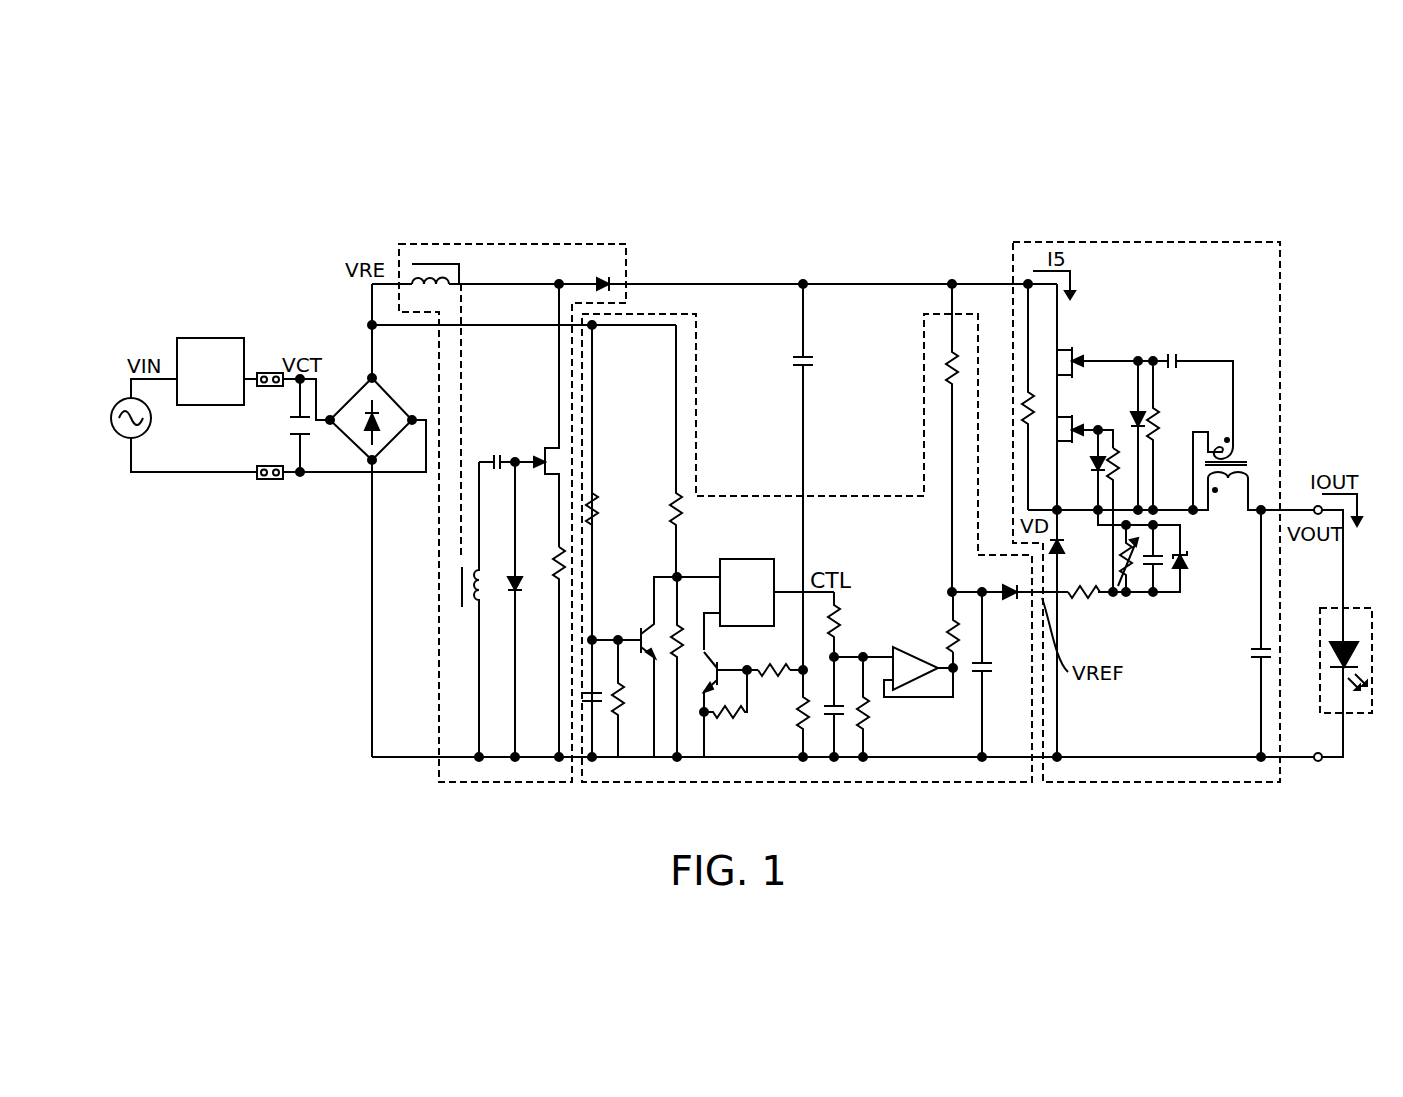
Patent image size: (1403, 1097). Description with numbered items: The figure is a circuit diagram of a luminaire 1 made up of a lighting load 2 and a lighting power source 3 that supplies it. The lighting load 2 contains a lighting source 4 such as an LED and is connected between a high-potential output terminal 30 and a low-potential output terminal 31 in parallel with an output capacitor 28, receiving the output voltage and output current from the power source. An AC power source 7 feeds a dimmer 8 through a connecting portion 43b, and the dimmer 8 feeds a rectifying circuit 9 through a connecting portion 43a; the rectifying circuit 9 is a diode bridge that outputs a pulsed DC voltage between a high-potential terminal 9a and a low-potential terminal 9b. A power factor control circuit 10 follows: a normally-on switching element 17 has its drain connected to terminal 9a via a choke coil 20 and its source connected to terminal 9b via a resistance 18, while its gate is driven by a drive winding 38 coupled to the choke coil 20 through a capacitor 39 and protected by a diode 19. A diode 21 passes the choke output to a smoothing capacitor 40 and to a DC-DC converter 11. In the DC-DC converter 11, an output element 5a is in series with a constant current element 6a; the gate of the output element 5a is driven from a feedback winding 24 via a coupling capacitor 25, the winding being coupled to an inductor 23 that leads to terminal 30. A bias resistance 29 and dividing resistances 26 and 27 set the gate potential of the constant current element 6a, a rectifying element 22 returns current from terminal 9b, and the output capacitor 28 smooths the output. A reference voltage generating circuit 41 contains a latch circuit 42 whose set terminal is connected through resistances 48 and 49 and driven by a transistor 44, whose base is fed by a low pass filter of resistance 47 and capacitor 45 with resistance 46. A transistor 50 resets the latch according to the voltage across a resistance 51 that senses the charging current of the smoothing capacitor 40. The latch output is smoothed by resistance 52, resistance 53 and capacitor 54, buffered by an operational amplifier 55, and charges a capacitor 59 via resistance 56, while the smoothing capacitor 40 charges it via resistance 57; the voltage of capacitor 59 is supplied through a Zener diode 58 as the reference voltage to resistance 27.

The luminaire 1 is at (1304, 183).
The lighting load 2 is at (1330, 607).
The lighting power source 3 is at (1181, 208).
The lighting source 4 is at (1349, 640).
The output element 5a is at (1075, 352).
The constant current element 6a is at (1075, 422).
The AC power source 7 is at (125, 396).
The dimmer 8 is at (210, 337).
The rectifying circuit 9 is at (358, 398).
The high-potential terminal 9a is at (371, 375).
The low-potential terminal 9b is at (369, 464).
The power factor control circuit 10 is at (535, 243).
The DC-DC converter 11 is at (1093, 241).
The switching element 17 is at (540, 445).
The resistance 18 is at (551, 565).
The diode 19 is at (501, 575).
The choke coil 20 is at (432, 260).
The diode 21 is at (601, 277).
The rectifying element 22 is at (1062, 540).
The inductor 23 is at (1233, 497).
The feedback winding 24 is at (1222, 438).
The coupling capacitor 25 is at (1172, 352).
The dividing resistance 26 is at (1137, 568).
The dividing resistance 27 is at (1084, 600).
The output capacitor 28 is at (1257, 657).
The bias resistance 29 is at (1023, 412).
The high-potential output terminal 30 is at (1313, 506).
The low-potential output terminal 31 is at (1320, 762).
The drive winding 38 is at (486, 588).
The capacitor 39 is at (496, 454).
The smoothing capacitor 40 is at (813, 362).
The reference voltage generating circuit 41 is at (933, 312).
The latch circuit 42 is at (762, 558).
The connecting portion 43a is at (268, 372).
The connecting portion 43b is at (268, 486).
The transistor 44 is at (641, 632).
The capacitor 45 is at (600, 712).
The resistance 46 is at (621, 712).
The resistance 47 is at (600, 506).
The resistance 48 is at (682, 510).
The resistance 49 is at (668, 633).
The transistor 50 is at (724, 670).
The resistance 51 is at (793, 714).
The resistance 52 is at (844, 616).
The resistance 53 is at (869, 715).
The capacitor 54 is at (840, 720).
The operational amplifier 55 is at (915, 656).
The resistance 56 is at (947, 630).
The resistance 57 is at (945, 372).
The Zener diode 58 is at (1010, 600).
The capacitor 59 is at (990, 668).